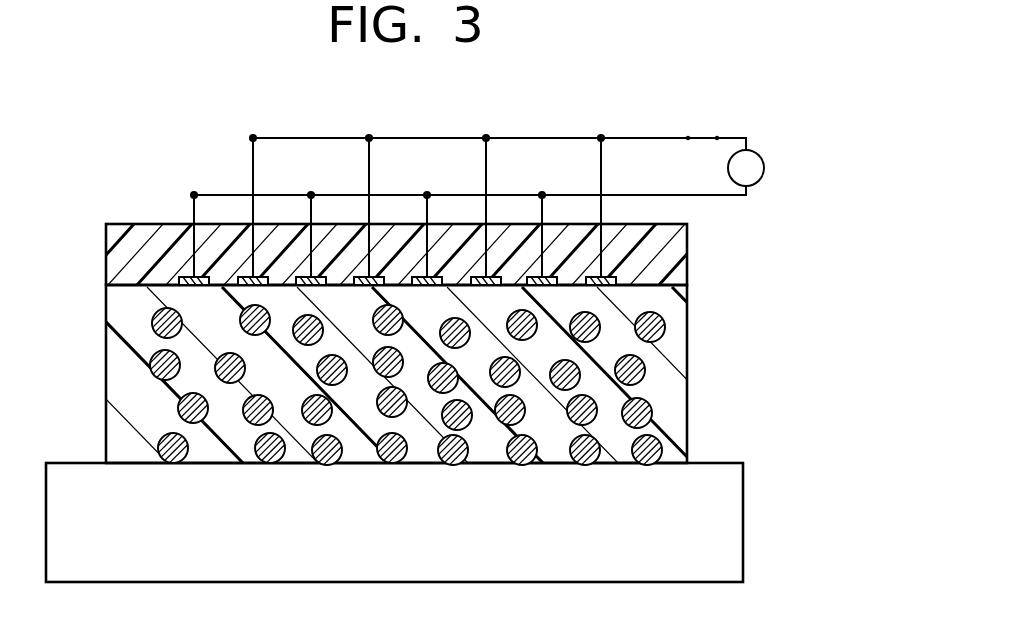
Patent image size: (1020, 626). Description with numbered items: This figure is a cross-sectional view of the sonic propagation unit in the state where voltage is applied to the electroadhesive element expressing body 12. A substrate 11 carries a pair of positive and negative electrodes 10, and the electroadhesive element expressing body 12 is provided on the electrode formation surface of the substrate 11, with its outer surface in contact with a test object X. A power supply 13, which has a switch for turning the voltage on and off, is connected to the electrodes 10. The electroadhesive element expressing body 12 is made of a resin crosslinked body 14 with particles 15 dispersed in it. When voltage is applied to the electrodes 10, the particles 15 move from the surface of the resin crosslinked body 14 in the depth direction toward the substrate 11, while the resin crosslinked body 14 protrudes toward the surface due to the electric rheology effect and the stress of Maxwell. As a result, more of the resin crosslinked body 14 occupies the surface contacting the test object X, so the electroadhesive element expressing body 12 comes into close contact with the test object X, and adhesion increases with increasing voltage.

The electrodes 10 is at (617, 283).
The substrate 11 is at (670, 247).
The electroadhesive element expressing body 12 is at (421, 375).
The power supply 13 is at (759, 156).
The resin crosslinked body 14 is at (421, 375).
The particles 15 is at (648, 413).
The test object X is at (743, 538).